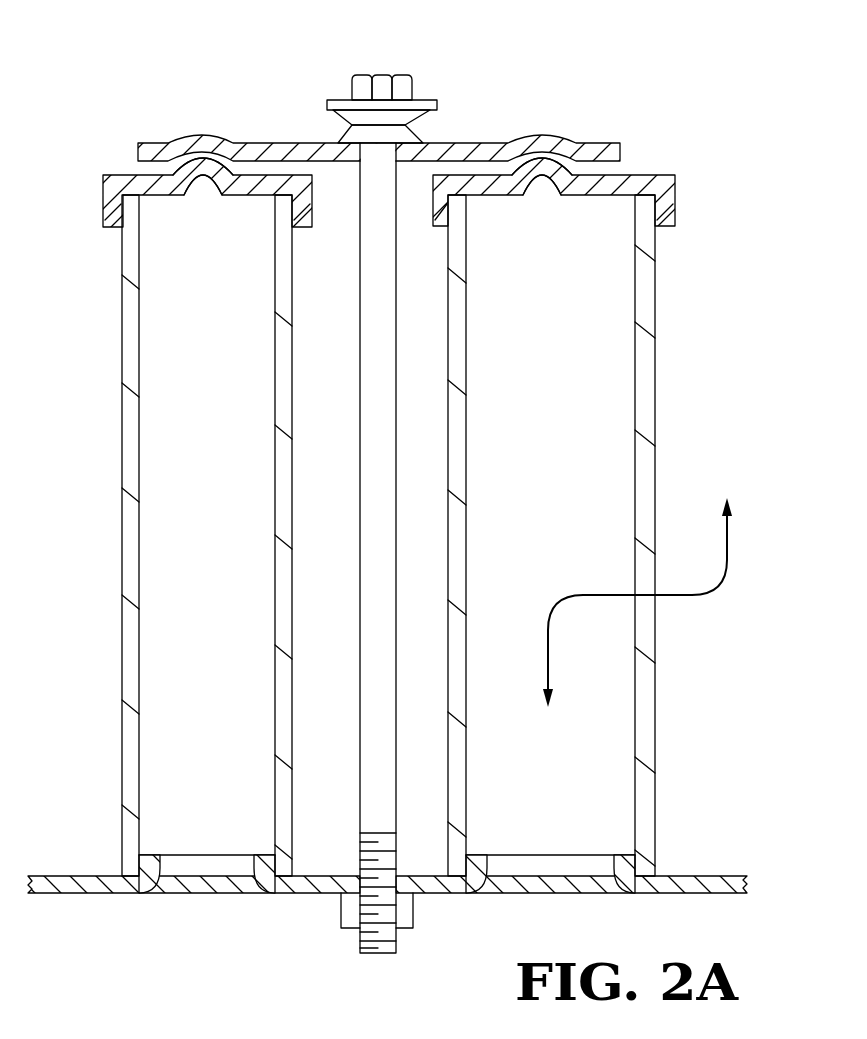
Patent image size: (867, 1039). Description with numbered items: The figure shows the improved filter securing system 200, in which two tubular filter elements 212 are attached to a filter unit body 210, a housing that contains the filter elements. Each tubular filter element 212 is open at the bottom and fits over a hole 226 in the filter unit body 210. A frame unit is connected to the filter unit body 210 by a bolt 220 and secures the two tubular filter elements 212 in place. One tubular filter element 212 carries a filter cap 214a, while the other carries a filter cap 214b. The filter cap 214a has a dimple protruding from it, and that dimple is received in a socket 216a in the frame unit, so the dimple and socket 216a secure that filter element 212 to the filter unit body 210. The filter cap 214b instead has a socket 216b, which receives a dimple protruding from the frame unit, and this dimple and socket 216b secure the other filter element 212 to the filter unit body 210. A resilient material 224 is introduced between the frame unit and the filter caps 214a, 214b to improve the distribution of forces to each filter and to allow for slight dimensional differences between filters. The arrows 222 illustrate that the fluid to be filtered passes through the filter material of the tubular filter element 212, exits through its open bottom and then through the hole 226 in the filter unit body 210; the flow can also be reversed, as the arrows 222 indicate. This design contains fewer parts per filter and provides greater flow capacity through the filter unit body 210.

The improved filter securing system 200 is at (531, 69).
The filter unit body 210 is at (117, 894).
The tubular filter element 212 is at (122, 472).
The filter cap 214a is at (103, 192).
The filter cap 214b is at (676, 204).
The socket 216a is at (214, 136).
The socket 216b is at (543, 200).
The bolt 220 is at (386, 74).
The arrows 222 is at (727, 552).
The resilient material 224 is at (185, 166).
The hole 226 is at (227, 875).